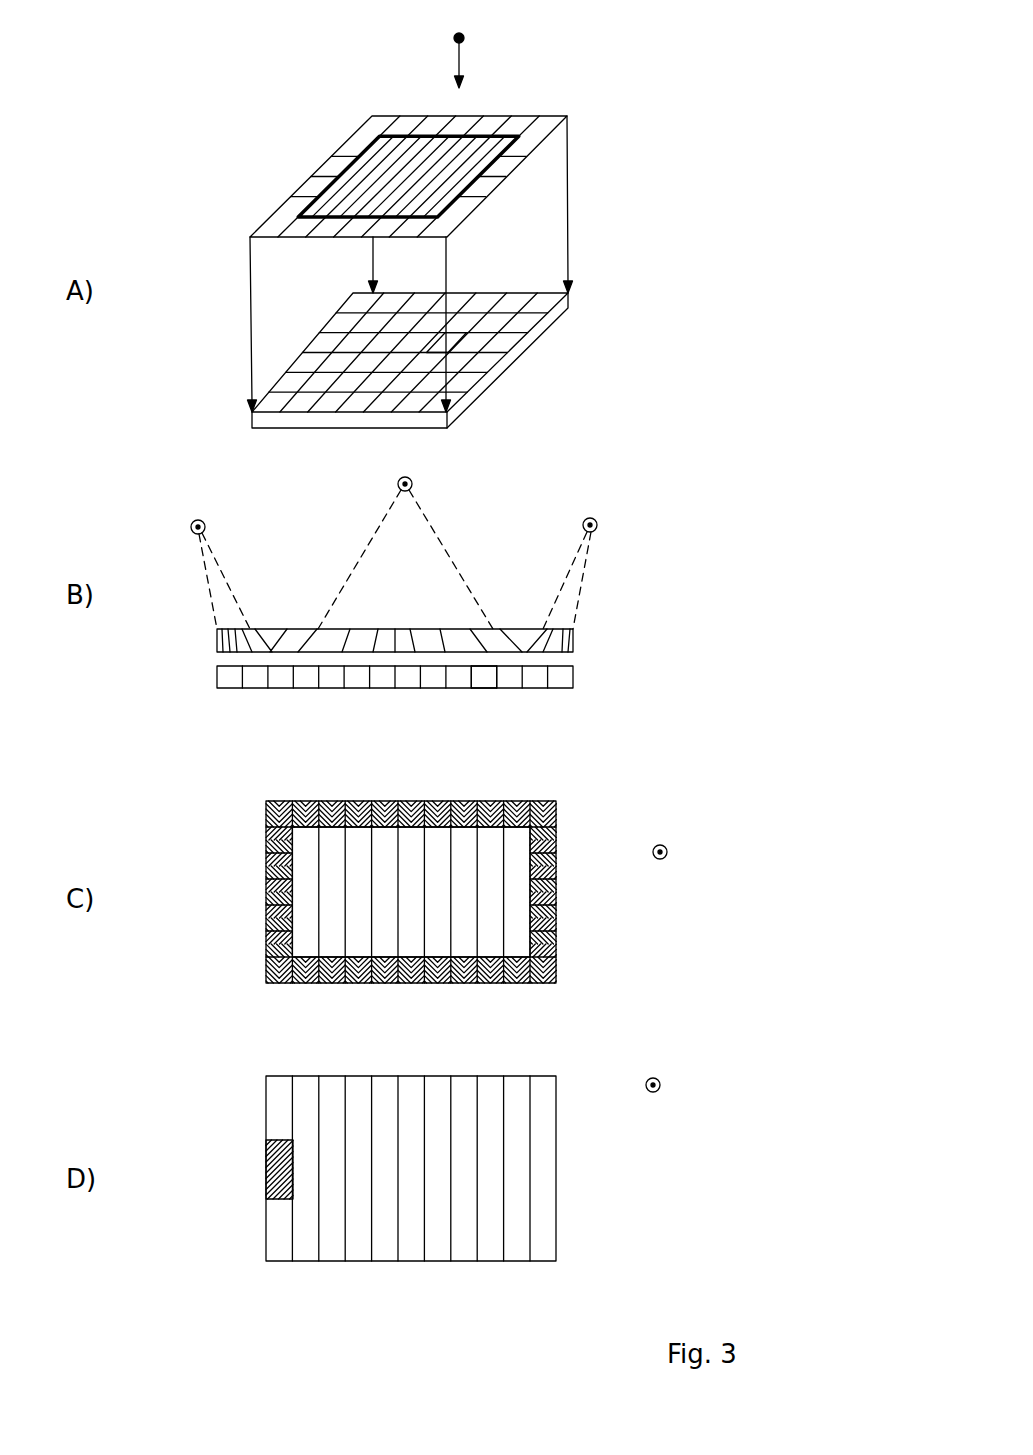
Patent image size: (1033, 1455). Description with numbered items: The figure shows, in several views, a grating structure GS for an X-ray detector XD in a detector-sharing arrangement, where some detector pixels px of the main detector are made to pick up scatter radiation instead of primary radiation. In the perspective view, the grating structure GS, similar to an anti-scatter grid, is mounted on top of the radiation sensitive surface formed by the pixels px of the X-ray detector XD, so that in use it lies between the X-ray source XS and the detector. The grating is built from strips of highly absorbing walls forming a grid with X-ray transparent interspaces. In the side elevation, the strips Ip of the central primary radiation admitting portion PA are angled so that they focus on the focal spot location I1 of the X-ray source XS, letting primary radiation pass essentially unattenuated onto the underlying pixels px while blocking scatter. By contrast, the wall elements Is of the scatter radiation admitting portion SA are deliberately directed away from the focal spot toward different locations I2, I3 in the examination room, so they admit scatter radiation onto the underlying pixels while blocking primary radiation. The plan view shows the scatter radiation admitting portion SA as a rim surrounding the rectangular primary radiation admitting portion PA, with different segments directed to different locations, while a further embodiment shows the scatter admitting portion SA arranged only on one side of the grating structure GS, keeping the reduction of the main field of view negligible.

The X-ray source XS is at (573, 551).
The strips of the primary radiation admitting portion Ip is at (393, 158).
The strips of the scatter radiation admitting portion Is is at (497, 123).
The grating structure GS is at (572, 118).
The X-ray detector XD is at (574, 302).
The detector pixels px is at (453, 341).
The focal spot location I1 is at (412, 470).
The second location I2 is at (594, 518).
The third location I3 is at (199, 520).
The primary radiation admitting portion PA is at (450, 610).
The scatter radiation admitting portion SA is at (240, 628).